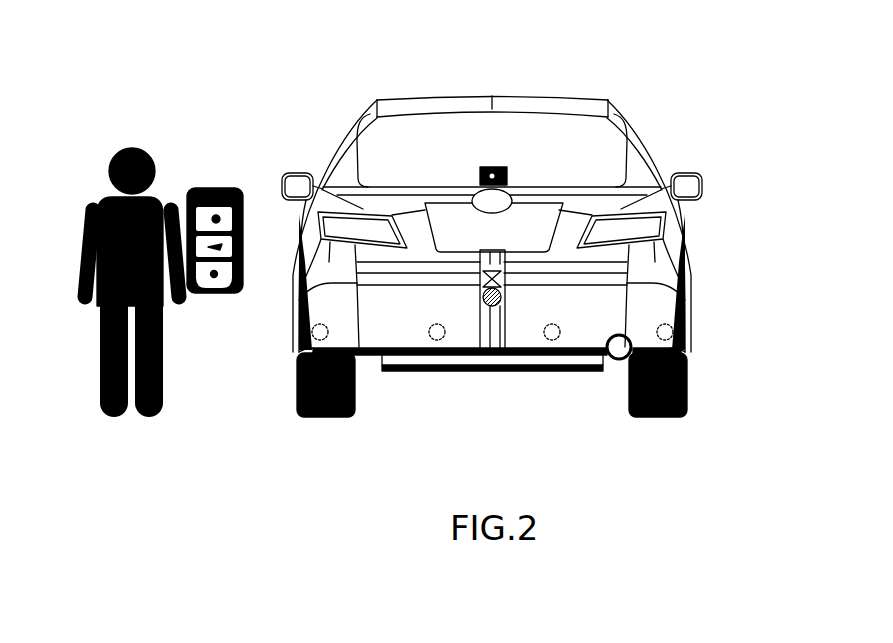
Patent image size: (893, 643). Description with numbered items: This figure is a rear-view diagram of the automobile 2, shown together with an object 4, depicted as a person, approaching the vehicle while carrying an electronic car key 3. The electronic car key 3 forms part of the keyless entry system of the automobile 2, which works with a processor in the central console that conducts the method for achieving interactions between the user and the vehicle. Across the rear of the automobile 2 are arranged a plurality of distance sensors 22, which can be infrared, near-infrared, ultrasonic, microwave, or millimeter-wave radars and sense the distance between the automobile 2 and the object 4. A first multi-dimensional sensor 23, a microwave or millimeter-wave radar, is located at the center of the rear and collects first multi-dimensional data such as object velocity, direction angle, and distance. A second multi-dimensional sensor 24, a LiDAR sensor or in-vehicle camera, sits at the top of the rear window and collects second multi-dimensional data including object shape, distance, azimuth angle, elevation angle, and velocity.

The automobile 2 is at (611, 88).
The electronic car key 3 is at (226, 178).
The object 4 is at (118, 146).
The distance sensor 22 is at (312, 333).
The first multi-dimensional sensor 23 is at (484, 307).
The second multi-dimensional sensor 24 is at (479, 176).